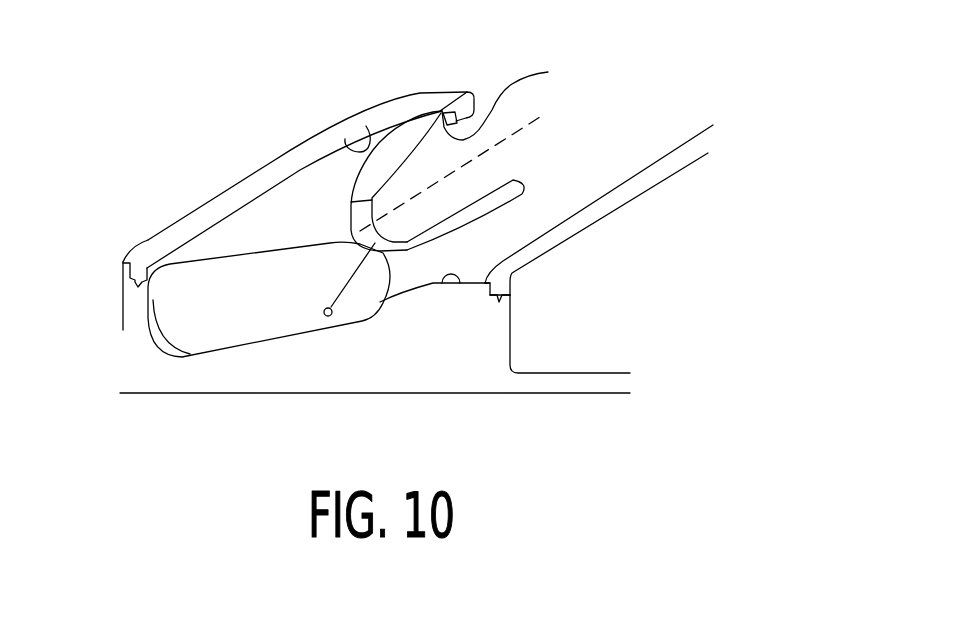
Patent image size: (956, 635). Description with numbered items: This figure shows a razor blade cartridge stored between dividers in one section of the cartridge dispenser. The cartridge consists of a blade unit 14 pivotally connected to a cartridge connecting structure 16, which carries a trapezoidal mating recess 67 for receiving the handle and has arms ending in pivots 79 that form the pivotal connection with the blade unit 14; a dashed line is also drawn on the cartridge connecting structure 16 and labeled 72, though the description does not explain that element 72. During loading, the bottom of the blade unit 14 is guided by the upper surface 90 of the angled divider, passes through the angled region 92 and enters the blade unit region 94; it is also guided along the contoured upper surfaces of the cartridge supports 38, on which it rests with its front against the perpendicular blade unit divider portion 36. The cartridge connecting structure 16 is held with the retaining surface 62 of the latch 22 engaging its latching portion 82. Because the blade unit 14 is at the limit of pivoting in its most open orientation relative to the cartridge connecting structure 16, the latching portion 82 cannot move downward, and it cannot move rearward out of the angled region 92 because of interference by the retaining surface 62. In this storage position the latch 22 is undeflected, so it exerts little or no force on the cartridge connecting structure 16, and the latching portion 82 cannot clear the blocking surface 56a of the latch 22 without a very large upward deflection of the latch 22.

The blade unit 14 is at (238, 252).
The cartridge connecting structure 16 is at (502, 207).
The latch 22 is at (452, 90).
The perpendicular blade unit divider portion 36 is at (130, 308).
The cartridge support 38 is at (459, 274).
The blocking surface 56a is at (527, 97).
The retaining surface 62 is at (366, 126).
The mating recess 67 is at (477, 183).
The pivot axis 72 is at (523, 126).
The pivot 79 is at (325, 308).
The latching portion 82 is at (441, 91).
The upper surface 90 is at (243, 177).
The angled region 92 is at (317, 173).
The blade unit region 94 is at (147, 238).